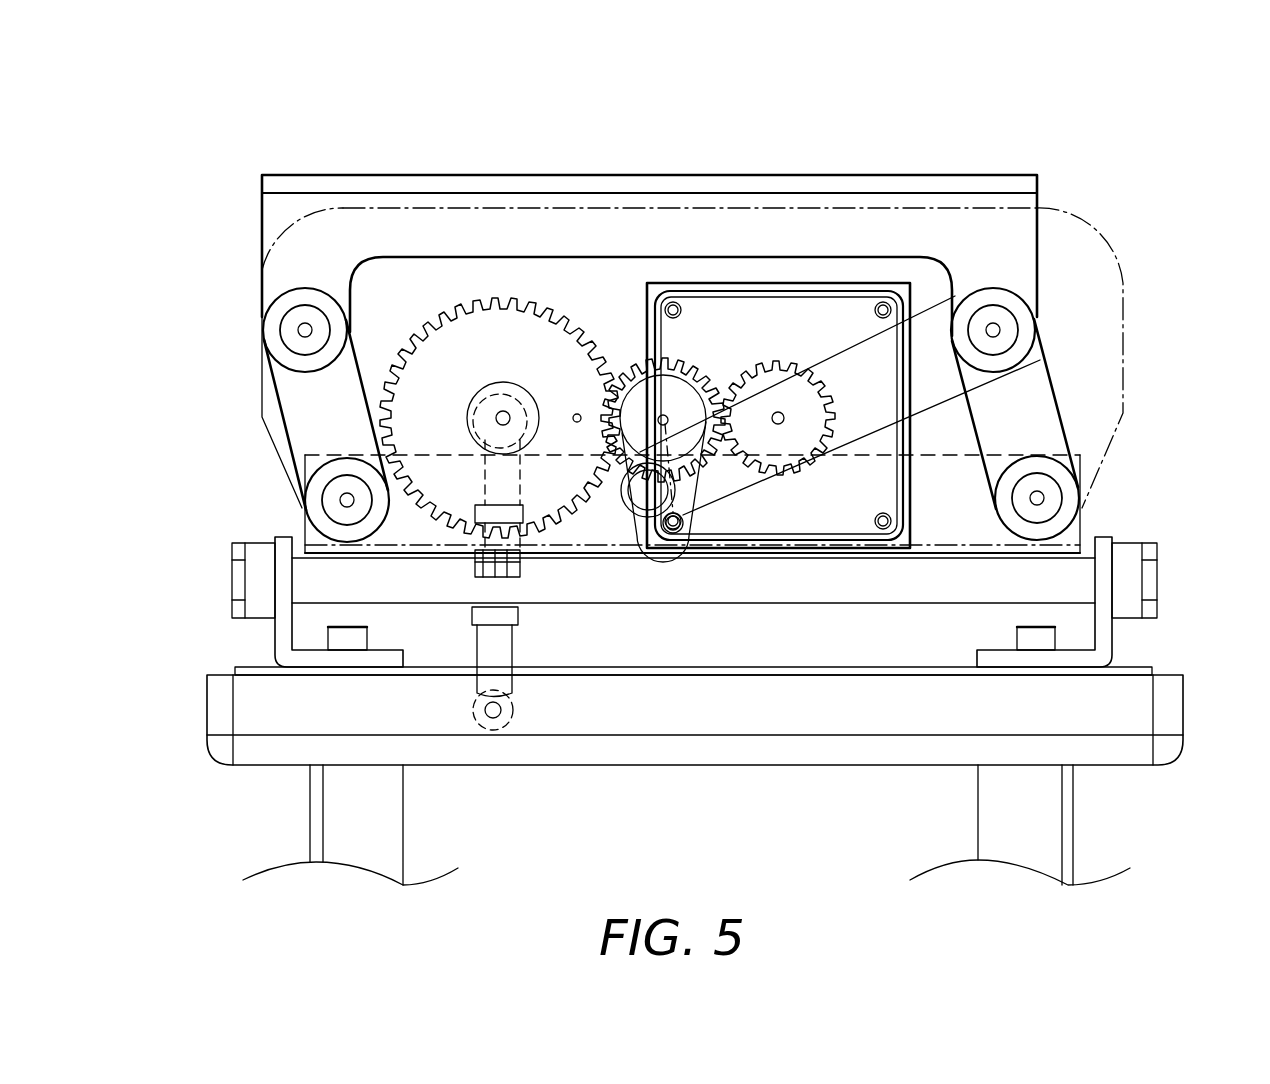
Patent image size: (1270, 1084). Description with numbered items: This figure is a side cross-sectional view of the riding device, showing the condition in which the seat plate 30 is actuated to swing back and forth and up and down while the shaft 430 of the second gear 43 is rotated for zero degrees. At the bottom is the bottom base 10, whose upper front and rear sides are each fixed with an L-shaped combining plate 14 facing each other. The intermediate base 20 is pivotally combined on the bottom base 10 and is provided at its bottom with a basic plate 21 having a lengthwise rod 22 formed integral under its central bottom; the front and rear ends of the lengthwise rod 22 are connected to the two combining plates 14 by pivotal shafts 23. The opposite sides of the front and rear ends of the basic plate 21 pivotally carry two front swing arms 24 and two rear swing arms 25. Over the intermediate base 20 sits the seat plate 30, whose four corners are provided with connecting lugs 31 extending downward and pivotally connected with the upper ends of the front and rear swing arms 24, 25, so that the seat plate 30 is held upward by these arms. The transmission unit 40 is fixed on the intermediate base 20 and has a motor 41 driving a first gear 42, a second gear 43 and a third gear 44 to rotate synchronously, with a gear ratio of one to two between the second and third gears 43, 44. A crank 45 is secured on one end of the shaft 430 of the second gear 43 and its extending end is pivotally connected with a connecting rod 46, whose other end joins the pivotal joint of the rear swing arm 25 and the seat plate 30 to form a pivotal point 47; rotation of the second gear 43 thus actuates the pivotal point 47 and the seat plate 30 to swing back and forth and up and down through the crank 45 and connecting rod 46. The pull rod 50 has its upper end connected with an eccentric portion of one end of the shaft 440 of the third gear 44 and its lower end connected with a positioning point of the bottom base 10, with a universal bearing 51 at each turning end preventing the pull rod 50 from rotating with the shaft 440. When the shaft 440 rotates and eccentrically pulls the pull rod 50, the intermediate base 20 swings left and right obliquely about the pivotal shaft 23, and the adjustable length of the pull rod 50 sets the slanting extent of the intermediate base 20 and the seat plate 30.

The bottom base 10 is at (1143, 718).
The L-shaped combining plate 14 is at (283, 562).
The intermediate base 20 is at (1057, 553).
The basic plate 21 is at (1100, 556).
The lengthwise rod 22 is at (1060, 590).
The pivotal shaft 23 is at (258, 598).
The front swing arm 24 is at (298, 387).
The rear swing arm 25 is at (1022, 408).
The seat plate 30 is at (871, 183).
The connecting lug 31 is at (288, 292).
The transmission unit 40 is at (812, 118).
The motor 41 is at (808, 307).
The first gear 42 is at (758, 360).
The second gear 43 is at (633, 370).
The third gear 44 is at (483, 327).
The shaft of the third gear 440 is at (467, 405).
The crank 45 is at (638, 556).
The connecting rod 46 is at (845, 455).
The pivotal point 47 is at (995, 330).
The pull rod 50 is at (505, 580).
The universal bearing 51 is at (490, 432).
The shaft of the second gear 430 is at (684, 532).